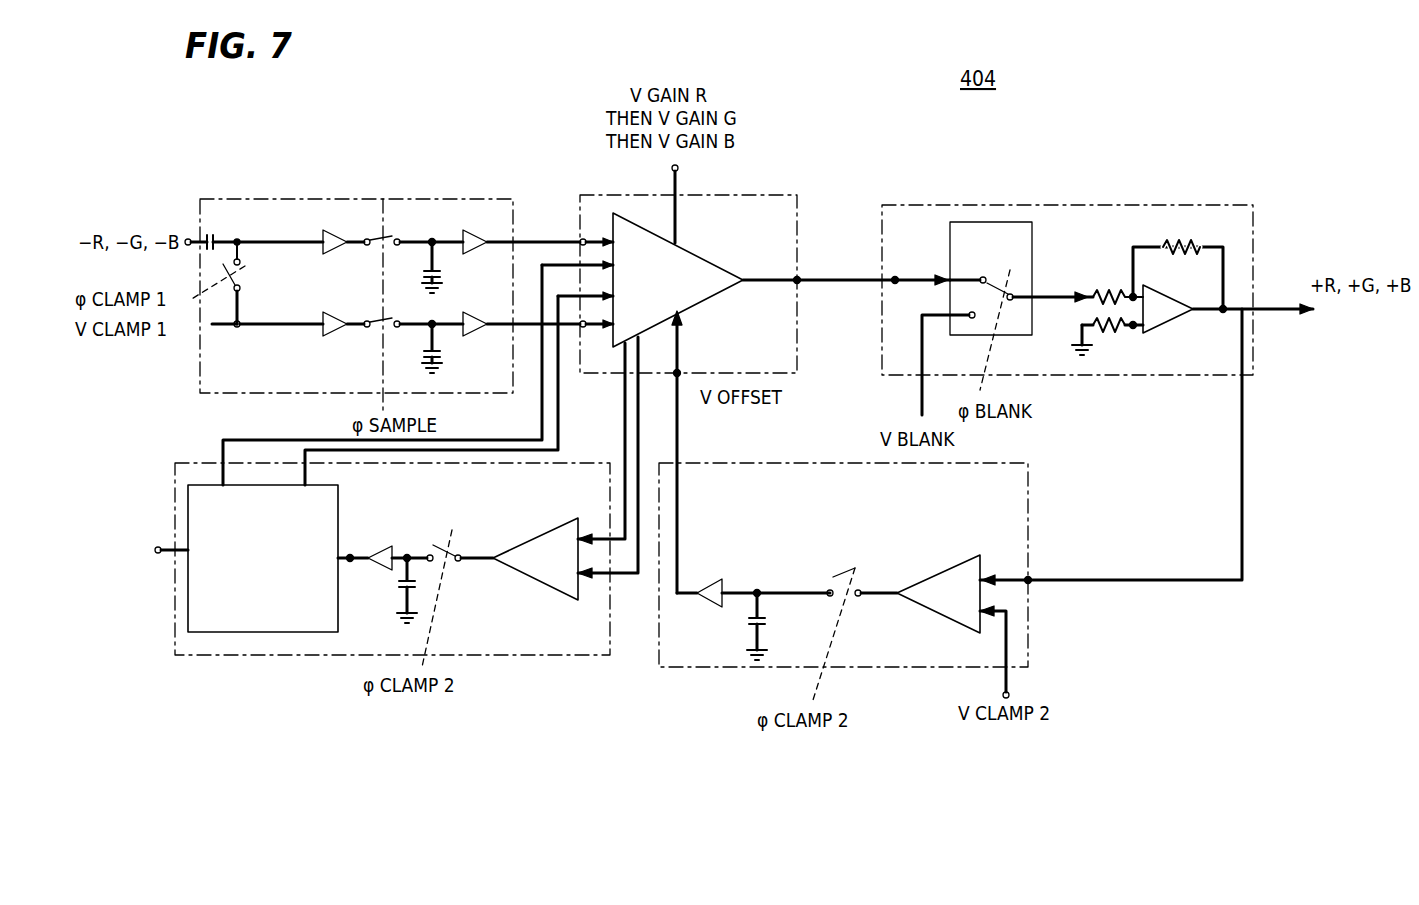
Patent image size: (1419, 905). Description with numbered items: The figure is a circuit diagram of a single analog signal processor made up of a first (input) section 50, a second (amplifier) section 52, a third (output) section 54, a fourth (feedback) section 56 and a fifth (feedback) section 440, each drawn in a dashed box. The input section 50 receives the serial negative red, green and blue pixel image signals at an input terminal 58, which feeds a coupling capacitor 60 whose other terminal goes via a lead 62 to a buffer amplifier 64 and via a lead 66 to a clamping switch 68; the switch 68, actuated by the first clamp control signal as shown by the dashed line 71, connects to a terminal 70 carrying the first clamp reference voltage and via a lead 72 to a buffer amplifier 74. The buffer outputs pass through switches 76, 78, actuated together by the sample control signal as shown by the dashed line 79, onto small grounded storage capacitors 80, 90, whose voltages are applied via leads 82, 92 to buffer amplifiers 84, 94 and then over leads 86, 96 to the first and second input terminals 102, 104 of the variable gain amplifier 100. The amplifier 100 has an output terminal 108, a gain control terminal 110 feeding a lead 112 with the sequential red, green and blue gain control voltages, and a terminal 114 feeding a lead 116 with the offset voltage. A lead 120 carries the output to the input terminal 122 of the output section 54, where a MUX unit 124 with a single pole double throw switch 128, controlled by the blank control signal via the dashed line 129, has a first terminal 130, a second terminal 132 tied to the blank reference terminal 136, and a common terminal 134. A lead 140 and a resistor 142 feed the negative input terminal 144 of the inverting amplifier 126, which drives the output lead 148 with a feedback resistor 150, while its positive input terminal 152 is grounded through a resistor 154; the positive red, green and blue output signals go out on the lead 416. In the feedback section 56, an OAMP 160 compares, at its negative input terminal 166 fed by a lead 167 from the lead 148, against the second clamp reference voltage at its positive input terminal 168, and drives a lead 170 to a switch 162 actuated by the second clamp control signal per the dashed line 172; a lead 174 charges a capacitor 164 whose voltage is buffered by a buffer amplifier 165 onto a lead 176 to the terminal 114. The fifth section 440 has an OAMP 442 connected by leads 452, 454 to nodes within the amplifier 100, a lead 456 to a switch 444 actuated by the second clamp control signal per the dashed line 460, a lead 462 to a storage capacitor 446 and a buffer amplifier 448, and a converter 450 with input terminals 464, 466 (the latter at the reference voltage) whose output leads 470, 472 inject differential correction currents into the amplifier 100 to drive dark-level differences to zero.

The first (input) section 50 is at (268, 199).
The second (amplifier) section 52 is at (790, 195).
The third (output) section 54 is at (1030, 205).
The fourth (feedback) section 56 is at (1028, 500).
The input terminal 58 is at (205, 240).
The coupling capacitor 60 is at (220, 242).
The lead 62 is at (320, 237).
The buffer amplifier 64 is at (345, 236).
The lead 66 is at (240, 262).
The clamping switch 68 is at (240, 288).
The terminal 70 is at (237, 327).
The dashed line 71 is at (240, 268).
The lead 72 is at (285, 326).
The buffer amplifier 74 is at (335, 318).
The switch 76 is at (385, 225).
The switch 78 is at (390, 318).
The dashed line 79 is at (385, 268).
The storage capacitor 80 is at (445, 272).
The lead 82 is at (445, 230).
The buffer amplifier 84 is at (488, 228).
The lead 86 is at (548, 240).
The storage capacitor 90 is at (445, 355).
The lead 92 is at (445, 315).
The buffer amplifier 94 is at (480, 316).
The lead 96 is at (533, 340).
The variable gain amplifier 100 is at (735, 272).
The first input terminal 102 is at (580, 232).
The second input terminal 104 is at (594, 335).
The output terminal 108 is at (800, 280).
The gain control terminal 110 is at (680, 170).
The lead 112 is at (678, 222).
The terminal 114 is at (680, 375).
The lead 116 is at (672, 342).
The lead 120 is at (830, 282).
The input terminal 122 is at (896, 276).
The multiplex (MUX) unit 124 is at (968, 222).
The inverting amplifier 126 is at (1168, 328).
The single pole double throw switch 128 is at (995, 278).
The dashed line 129 is at (998, 330).
The first terminal 130 is at (982, 277).
The second terminal 132 is at (969, 315).
The common third terminal 134 is at (1013, 296).
The second input terminal 136 is at (922, 415).
The lead 140 is at (1090, 295).
The resistor 142 is at (1128, 292).
The negative input terminal 144 is at (1137, 292).
The output lead 148 is at (1232, 300).
The feedback resistor 150 is at (1183, 240).
The positive input terminal 152 is at (1140, 335).
The resistor 154 is at (1110, 335).
The operational amplifier (OAMP) 160 is at (920, 580).
The switch 162 is at (838, 600).
The capacitor 164 is at (752, 630).
The buffer amplifier 165 is at (705, 578).
The negative input terminal 166 is at (1025, 578).
The lead 167 is at (1242, 528).
The positive input terminal 168 is at (1010, 690).
The lead 170 is at (878, 597).
The dashed line 172 is at (838, 572).
The lead 174 is at (780, 591).
The lead 176 is at (678, 490).
The lead 416 is at (1278, 312).
The fifth (feedback) section 440 is at (175, 485).
The operational amplifier (OAMP) 442 is at (538, 518).
The switch 444 is at (440, 540).
The storage capacitor 446 is at (405, 605).
The buffer amplifier 448 is at (370, 553).
The differential voltage to differential current converter 450 is at (348, 495).
The lead 452 is at (638, 576).
The lead 454 is at (625, 458).
The lead 456 is at (472, 557).
The dashed line 460 is at (432, 630).
The lead 462 is at (408, 556).
The input terminal 464 is at (352, 560).
The input terminal 466 is at (158, 555).
The output lead 470 is at (228, 440).
The output lead 472 is at (308, 450).